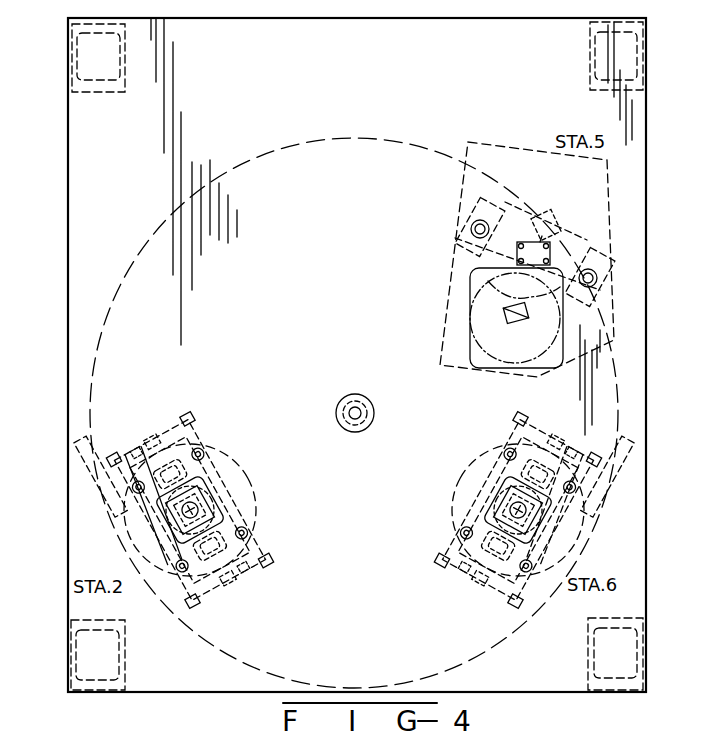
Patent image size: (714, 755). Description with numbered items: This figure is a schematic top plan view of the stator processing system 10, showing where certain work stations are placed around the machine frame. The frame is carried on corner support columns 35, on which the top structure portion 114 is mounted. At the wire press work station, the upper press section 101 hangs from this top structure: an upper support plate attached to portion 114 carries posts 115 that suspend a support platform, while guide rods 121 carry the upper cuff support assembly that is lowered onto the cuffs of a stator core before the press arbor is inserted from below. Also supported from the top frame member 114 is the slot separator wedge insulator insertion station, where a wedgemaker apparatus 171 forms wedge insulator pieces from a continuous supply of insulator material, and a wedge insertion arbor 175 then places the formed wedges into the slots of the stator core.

The rotary index table 10 is at (284, 146).
The top structure portion 114 is at (68, 343).
The corner support columns 35 is at (122, 77).
The upper press section 101 is at (210, 441).
The posts 115 is at (205, 461).
The guide rods 121 is at (154, 443).
The wedgemaker apparatus 171 is at (448, 262).
The wedge insertion arbor 175 is at (455, 338).